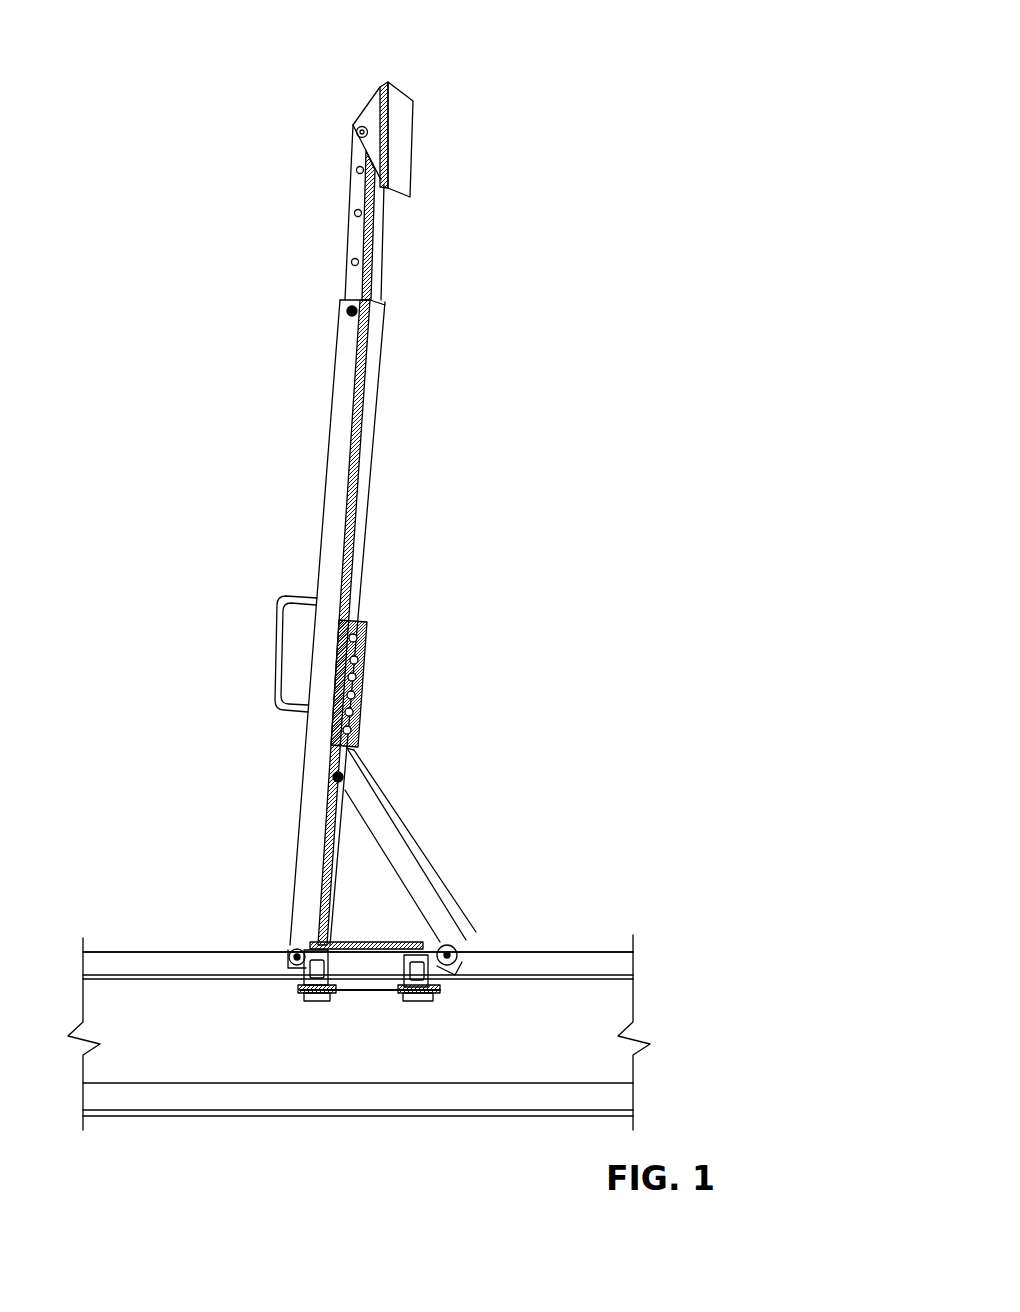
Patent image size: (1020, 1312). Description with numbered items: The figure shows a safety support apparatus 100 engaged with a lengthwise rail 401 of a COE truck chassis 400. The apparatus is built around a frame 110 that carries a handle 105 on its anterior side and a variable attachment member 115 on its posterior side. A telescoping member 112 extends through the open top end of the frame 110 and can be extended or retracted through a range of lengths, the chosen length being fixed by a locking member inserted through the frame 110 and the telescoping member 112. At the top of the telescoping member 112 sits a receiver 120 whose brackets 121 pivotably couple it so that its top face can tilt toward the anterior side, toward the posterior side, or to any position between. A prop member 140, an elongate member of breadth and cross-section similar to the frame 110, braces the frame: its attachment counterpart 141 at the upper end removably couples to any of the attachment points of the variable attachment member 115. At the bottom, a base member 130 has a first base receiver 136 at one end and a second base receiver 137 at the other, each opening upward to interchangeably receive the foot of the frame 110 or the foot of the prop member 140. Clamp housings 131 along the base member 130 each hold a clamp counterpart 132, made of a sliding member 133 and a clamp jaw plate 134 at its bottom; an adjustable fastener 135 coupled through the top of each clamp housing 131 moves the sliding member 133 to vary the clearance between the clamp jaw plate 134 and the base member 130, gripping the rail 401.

The support apparatus 100 is at (236, 96).
The frame 110 is at (214, 467).
The telescoping member 112 is at (348, 237).
The variable attachment member 115 is at (368, 673).
The receiver 120 is at (405, 148).
The brackets 121 is at (356, 133).
The handle 105 is at (276, 656).
The prop member 140 is at (415, 850).
The attachment counterpart 141 is at (338, 777).
The base member 130 is at (362, 1003).
The clamp housing 131 is at (285, 960).
The clamp counterpart 132 is at (280, 992).
The sliding member 133 is at (305, 1000).
The clamp jaw plate 134 is at (318, 1010).
The adjustable fastener 135 is at (343, 941).
The first base receiver 136 is at (300, 950).
The second base receiver 137 is at (456, 945).
The COE truck chassis 400 is at (664, 976).
The lengthwise rail 401 is at (118, 949).